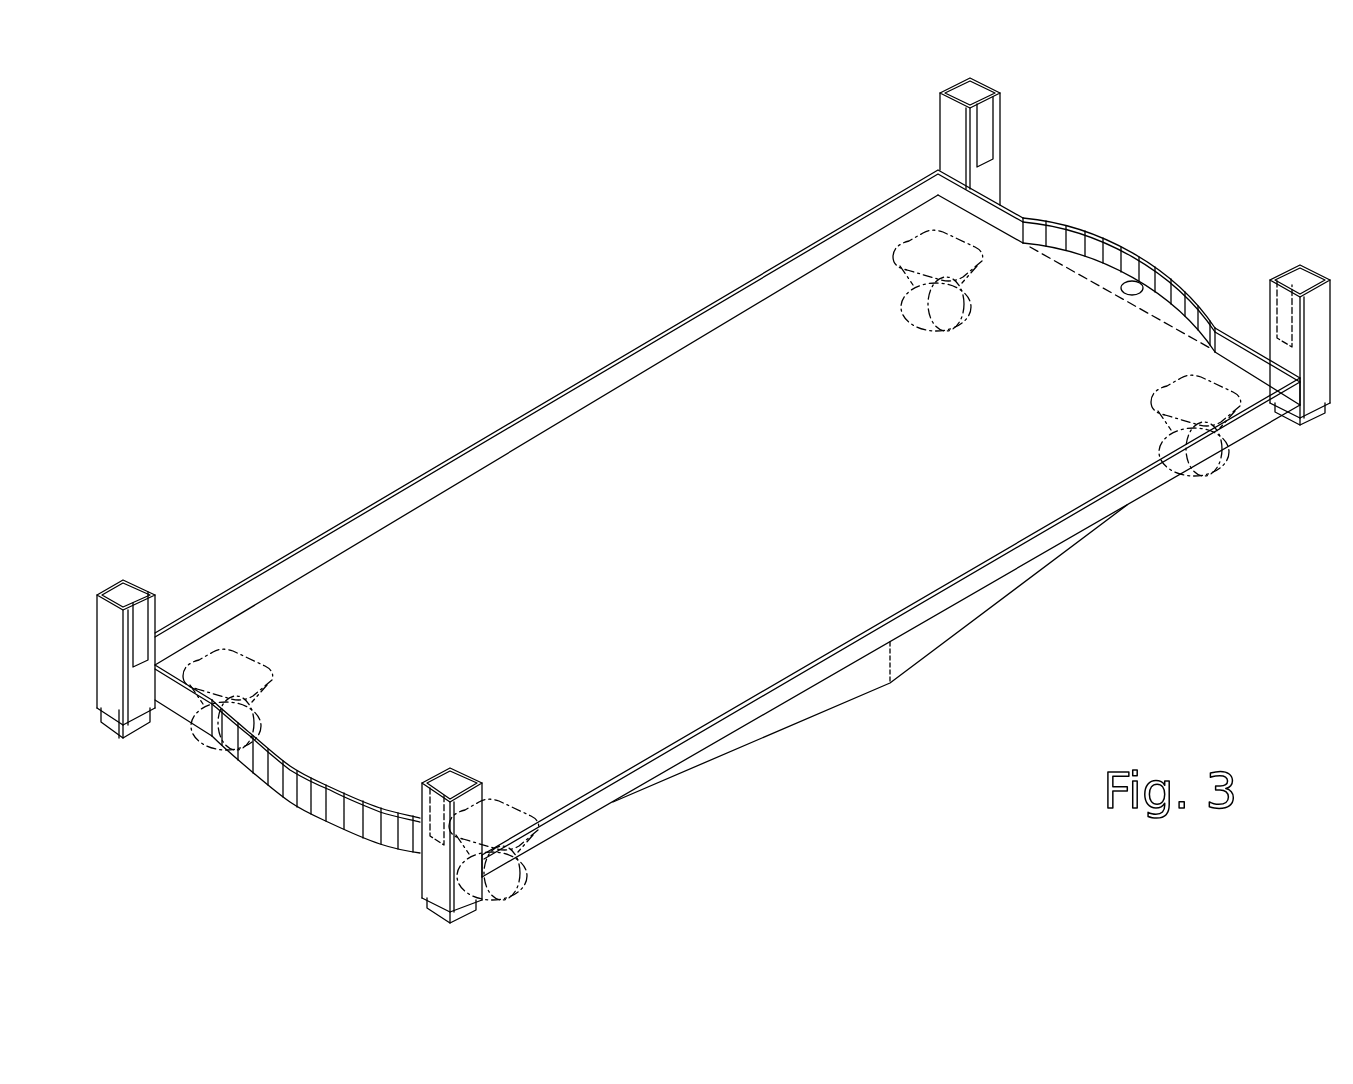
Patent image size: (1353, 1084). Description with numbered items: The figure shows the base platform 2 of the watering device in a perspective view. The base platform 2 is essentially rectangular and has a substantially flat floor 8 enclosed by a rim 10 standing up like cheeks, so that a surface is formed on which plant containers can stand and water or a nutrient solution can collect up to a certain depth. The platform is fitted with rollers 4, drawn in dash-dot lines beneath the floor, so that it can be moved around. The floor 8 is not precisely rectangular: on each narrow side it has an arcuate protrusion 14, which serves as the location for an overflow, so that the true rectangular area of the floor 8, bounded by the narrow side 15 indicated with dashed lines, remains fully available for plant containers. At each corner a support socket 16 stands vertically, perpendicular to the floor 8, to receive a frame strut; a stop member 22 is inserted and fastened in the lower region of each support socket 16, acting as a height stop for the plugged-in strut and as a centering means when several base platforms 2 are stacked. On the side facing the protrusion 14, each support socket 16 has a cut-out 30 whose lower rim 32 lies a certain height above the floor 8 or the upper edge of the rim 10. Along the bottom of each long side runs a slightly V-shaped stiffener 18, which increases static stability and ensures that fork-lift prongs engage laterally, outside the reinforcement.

The base platform 2 is at (545, 332).
The roller 4 is at (1200, 470).
The floor 8 is at (732, 519).
The rim 10 is at (772, 262).
The arcuate protrusion 14 is at (1113, 219).
The narrow side 15 is at (1160, 320).
The support socket 16 is at (948, 130).
The stiffener 18 is at (912, 660).
The stop member 22 is at (143, 727).
The cut-out 30 is at (160, 620).
The lower rim 32 is at (124, 722).